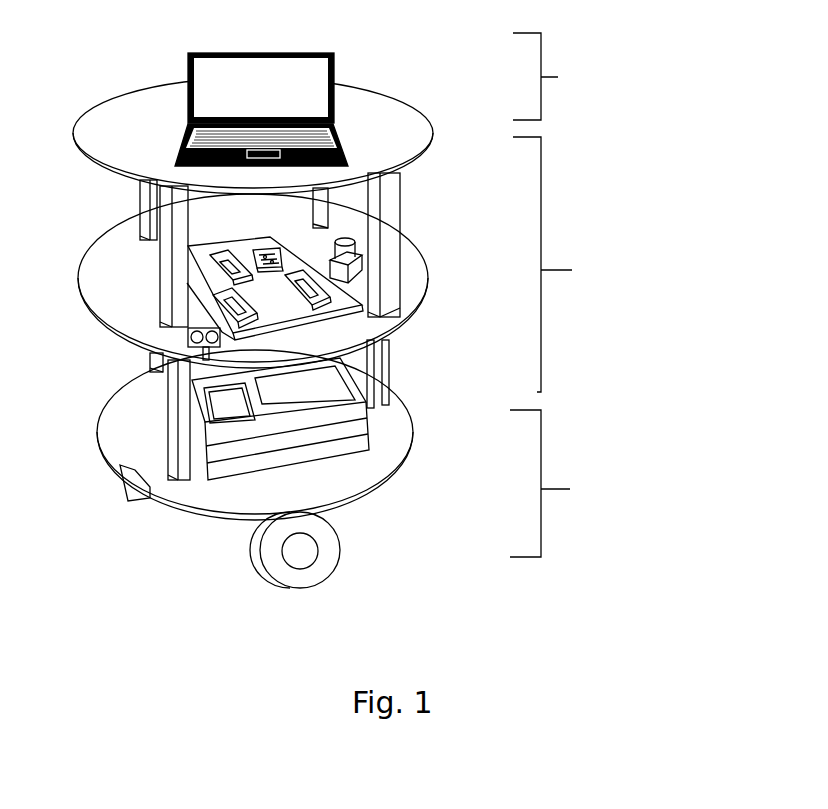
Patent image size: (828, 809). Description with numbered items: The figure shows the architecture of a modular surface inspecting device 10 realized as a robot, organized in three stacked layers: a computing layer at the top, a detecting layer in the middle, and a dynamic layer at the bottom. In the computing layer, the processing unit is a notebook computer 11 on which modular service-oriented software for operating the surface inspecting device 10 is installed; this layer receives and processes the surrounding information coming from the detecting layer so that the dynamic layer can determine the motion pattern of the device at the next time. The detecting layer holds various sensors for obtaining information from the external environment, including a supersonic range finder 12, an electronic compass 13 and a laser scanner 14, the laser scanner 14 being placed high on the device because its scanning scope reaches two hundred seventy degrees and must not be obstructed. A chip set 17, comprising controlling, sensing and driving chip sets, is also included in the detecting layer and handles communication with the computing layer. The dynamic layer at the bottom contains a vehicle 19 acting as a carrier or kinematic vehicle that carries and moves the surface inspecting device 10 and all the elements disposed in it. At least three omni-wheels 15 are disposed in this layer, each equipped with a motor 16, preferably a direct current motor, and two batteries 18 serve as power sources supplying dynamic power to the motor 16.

The surface inspecting device 10 is at (745, 470).
The notebook computer 11 is at (338, 71).
The supersonic range finder 12 is at (222, 342).
The electronic compass 13 is at (352, 210).
The laser scanner 14 is at (384, 256).
The omni-wheels 15 is at (344, 542).
The motor 16 is at (296, 440).
The chip set 17 is at (254, 304).
The batteries 18 is at (296, 440).
The vehicle 19 is at (122, 402).